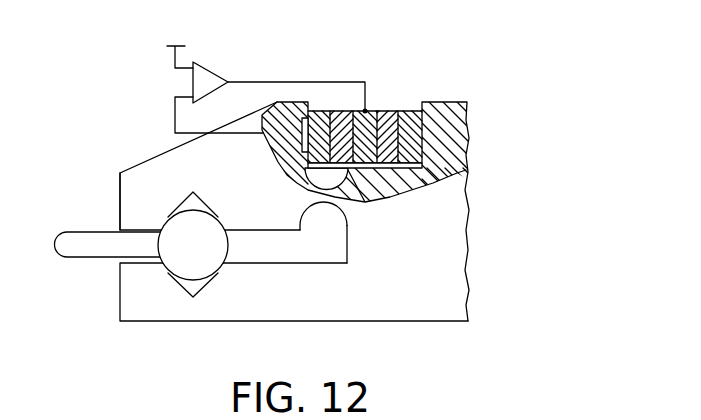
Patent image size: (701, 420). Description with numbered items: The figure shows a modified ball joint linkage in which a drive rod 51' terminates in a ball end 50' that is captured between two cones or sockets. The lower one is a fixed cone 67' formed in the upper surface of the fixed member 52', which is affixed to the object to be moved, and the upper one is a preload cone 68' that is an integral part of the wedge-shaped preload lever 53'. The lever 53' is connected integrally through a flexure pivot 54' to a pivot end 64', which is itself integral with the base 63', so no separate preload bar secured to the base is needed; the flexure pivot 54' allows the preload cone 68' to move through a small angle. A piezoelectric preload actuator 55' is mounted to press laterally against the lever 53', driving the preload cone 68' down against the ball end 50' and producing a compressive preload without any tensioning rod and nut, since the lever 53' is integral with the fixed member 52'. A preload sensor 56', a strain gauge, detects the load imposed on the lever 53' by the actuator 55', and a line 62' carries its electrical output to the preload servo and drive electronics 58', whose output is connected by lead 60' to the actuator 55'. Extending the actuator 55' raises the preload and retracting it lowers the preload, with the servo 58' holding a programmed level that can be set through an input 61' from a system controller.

The ball end 50' is at (193, 245).
The drive rod 51' is at (100, 266).
The fixed member 52' is at (295, 240).
The wedge-shaped preload lever 53' is at (185, 166).
The flexure pivot 54' is at (323, 227).
The preload actuator 55' is at (372, 104).
The preload sensor 56' is at (268, 143).
The preload servo and drive electronics 58' is at (236, 77).
The lead 60' is at (311, 73).
The input 61' is at (206, 48).
The line 62' is at (185, 108).
The base 63' is at (479, 210).
The pivot end 64' is at (377, 248).
The fixed cone 67' is at (221, 284).
The preload cone 68' is at (166, 172).